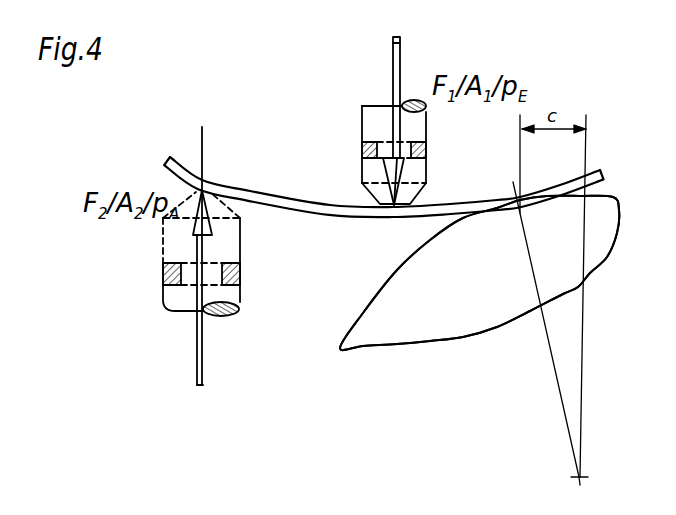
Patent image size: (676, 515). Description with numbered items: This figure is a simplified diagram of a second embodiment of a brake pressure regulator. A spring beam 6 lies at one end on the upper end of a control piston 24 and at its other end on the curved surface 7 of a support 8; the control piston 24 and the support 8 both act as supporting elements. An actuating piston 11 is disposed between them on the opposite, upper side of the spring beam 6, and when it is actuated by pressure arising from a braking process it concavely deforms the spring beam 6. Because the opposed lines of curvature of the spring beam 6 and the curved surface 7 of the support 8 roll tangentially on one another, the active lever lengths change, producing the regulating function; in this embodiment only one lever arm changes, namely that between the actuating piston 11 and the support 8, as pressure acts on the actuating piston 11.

The spring beam 6 is at (270, 204).
The actuating piston 11 is at (364, 261).
The control piston 24 is at (222, 252).
The curved surface 7 is at (365, 310).
The support 8 is at (415, 308).